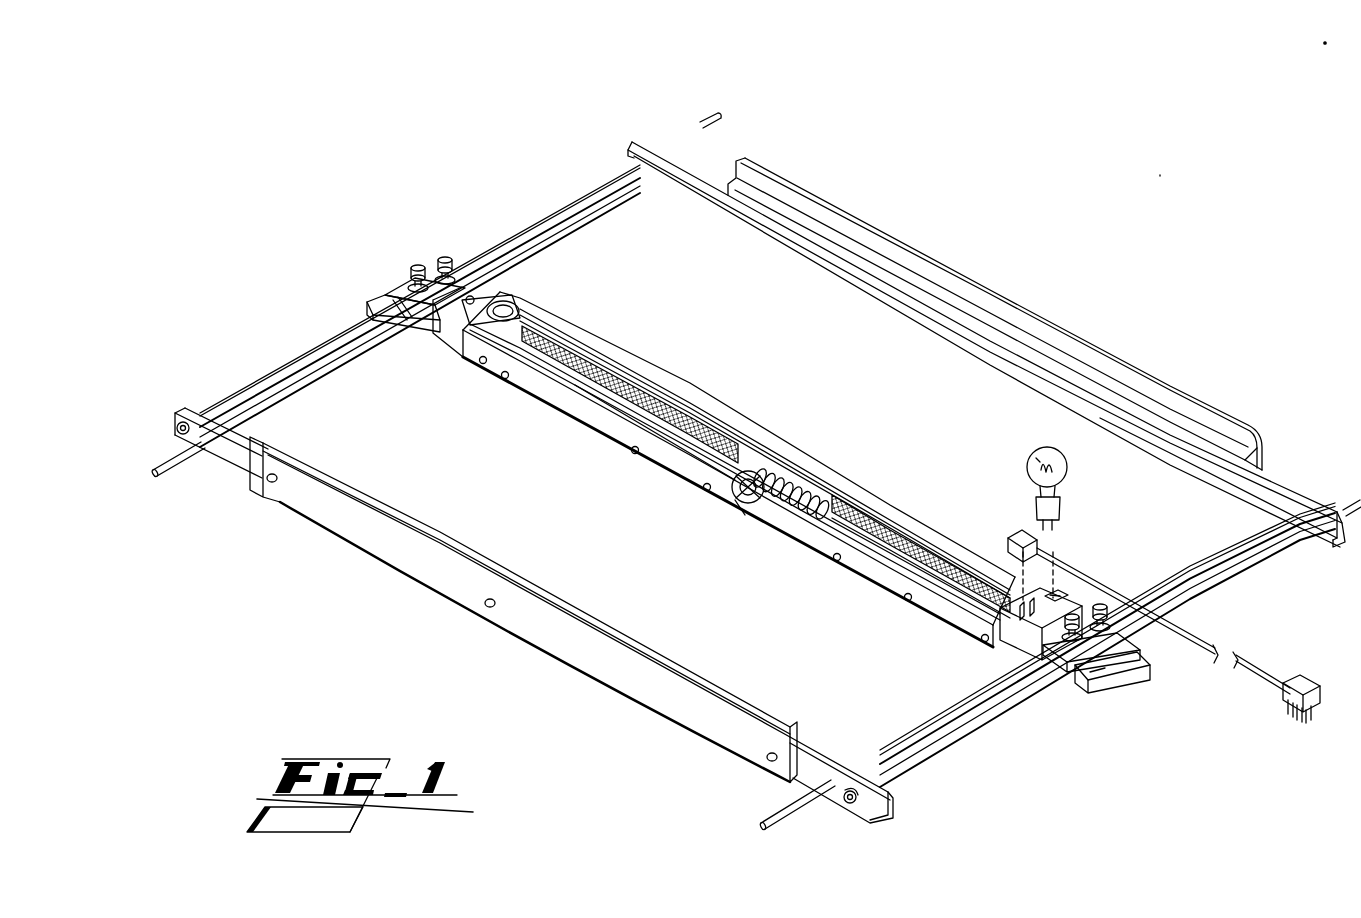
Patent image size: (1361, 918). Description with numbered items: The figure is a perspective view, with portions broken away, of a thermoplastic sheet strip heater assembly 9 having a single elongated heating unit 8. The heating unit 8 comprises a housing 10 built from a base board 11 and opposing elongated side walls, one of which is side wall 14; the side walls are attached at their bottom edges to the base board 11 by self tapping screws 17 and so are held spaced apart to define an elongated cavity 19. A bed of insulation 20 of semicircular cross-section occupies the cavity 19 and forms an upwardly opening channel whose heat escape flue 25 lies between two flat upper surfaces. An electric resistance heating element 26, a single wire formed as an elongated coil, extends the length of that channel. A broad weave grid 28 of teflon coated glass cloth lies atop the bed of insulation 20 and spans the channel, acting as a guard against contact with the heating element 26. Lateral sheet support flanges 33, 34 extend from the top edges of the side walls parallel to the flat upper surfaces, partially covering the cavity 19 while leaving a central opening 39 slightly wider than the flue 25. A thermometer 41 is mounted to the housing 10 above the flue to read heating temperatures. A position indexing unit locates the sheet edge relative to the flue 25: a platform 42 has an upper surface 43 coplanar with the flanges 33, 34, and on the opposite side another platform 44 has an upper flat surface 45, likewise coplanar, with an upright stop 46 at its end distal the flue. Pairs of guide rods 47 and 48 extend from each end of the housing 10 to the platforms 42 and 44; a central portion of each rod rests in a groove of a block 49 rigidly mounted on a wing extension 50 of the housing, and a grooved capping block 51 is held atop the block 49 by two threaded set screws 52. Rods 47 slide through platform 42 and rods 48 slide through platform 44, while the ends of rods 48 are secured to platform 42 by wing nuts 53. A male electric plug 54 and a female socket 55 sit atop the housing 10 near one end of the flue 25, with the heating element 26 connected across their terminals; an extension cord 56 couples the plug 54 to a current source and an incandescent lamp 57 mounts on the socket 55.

The heating unit 8 is at (380, 264).
The thermoplastic sheet strip heater assembly 9 is at (1160, 258).
The housing 10 is at (845, 572).
The base board 11 is at (800, 545).
The side wall 14 is at (600, 428).
The self tapping screws 17 is at (505, 372).
The cavity 19 is at (792, 508).
The bed of insulation 20 is at (750, 490).
The heat escape flue 25 is at (892, 520).
The electric resistance heating element 26 is at (812, 480).
The broad weave grid 28 is at (918, 545).
The lateral sheet support flange 33 is at (582, 403).
The lateral sheet support flange 34 is at (657, 370).
The central opening 39 is at (598, 352).
The thermometer 41 is at (520, 303).
The platform 42 is at (370, 568).
The upper surface 43 is at (478, 553).
The platform 44 is at (1178, 383).
The upper flat surface 45 is at (920, 280).
The upright stop 46 is at (1018, 313).
The guide rods 47 is at (318, 383).
The guide rods 48 is at (285, 372).
The block 49 is at (400, 320).
The wing extension 50 is at (382, 298).
The capping block 51 is at (428, 272).
The threaded set screws 52 is at (418, 268).
The wing nuts 53 is at (178, 410).
The male electric plug 54 is at (1005, 625).
The female receptacle or socket 55 is at (1060, 590).
The extension cord 56 is at (1260, 675).
The incandescent lamp 57 is at (1060, 465).